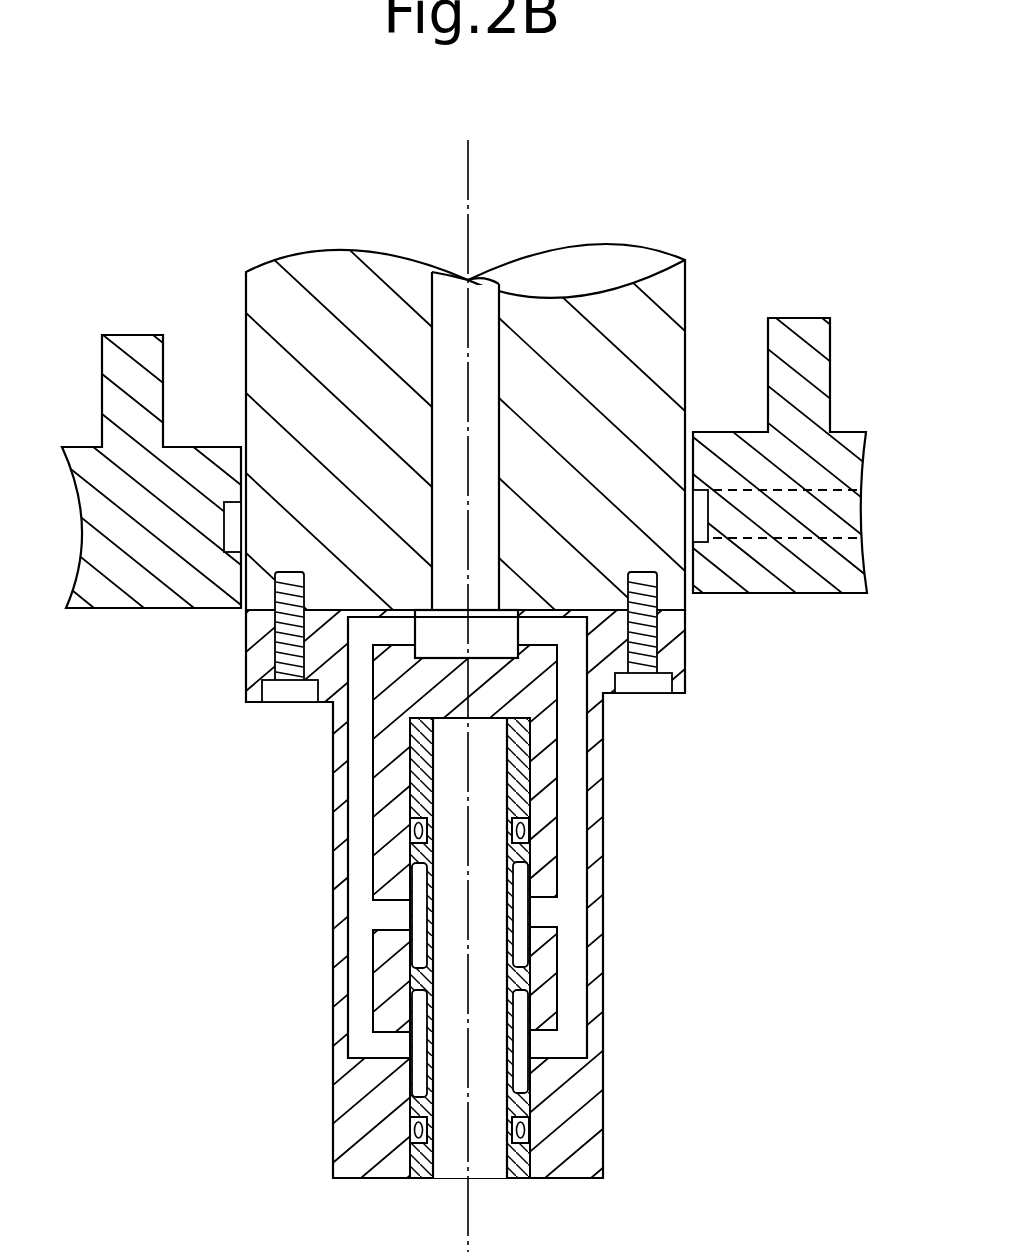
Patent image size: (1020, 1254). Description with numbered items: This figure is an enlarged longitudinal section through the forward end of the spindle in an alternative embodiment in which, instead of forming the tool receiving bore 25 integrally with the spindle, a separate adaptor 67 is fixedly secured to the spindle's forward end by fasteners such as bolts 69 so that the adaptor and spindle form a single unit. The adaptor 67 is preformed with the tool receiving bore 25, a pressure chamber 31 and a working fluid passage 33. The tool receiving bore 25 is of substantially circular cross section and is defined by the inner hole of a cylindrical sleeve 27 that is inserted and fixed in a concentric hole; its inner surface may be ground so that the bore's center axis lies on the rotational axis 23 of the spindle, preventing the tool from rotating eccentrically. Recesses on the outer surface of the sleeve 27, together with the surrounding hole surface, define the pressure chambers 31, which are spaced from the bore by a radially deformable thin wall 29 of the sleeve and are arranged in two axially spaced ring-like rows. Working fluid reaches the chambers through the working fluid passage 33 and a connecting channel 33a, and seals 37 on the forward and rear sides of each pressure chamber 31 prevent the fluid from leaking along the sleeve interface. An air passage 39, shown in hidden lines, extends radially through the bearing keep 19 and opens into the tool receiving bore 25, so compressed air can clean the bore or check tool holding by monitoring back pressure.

The bearing keep 19 is at (843, 583).
The rotational axis 23 is at (472, 1216).
The tool receiving bore 25 is at (495, 1150).
The cylindrical sleeve 27 is at (522, 1107).
The thin wall 29 is at (515, 906).
The pressure chamber 31 is at (525, 876).
The working fluid passage 33 is at (440, 312).
The channel 33a is at (572, 768).
The seal 37 is at (412, 836).
The air passage 39 is at (843, 487).
The adaptor 67 is at (605, 831).
The bolt 69 is at (287, 692).